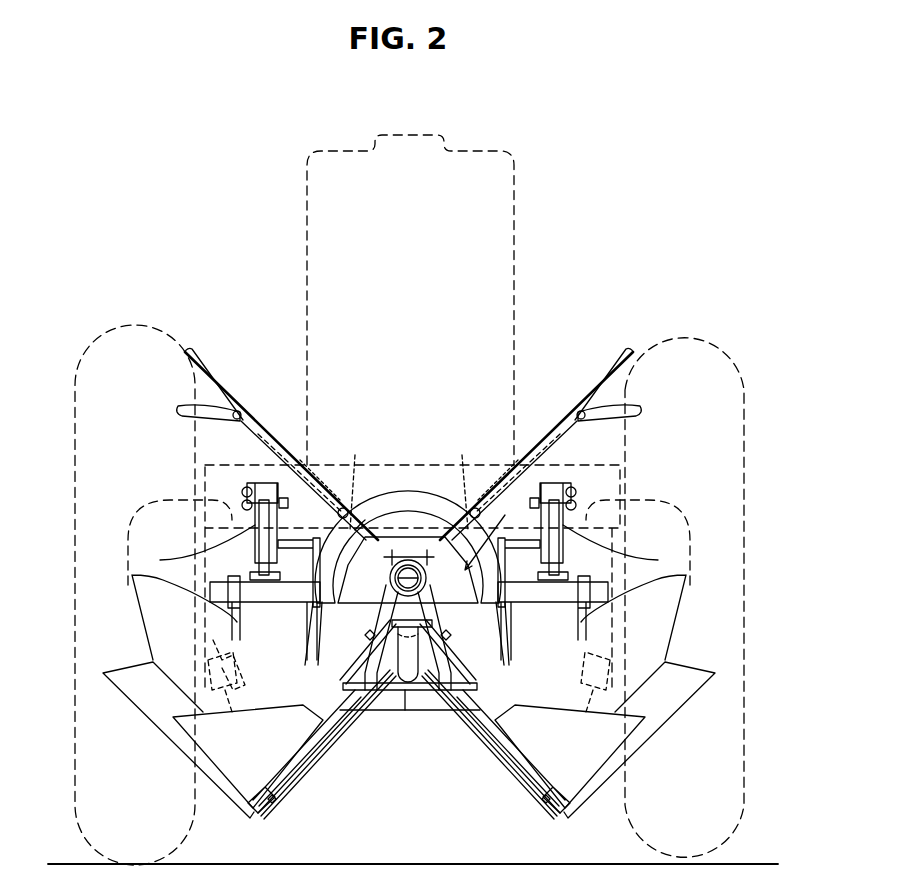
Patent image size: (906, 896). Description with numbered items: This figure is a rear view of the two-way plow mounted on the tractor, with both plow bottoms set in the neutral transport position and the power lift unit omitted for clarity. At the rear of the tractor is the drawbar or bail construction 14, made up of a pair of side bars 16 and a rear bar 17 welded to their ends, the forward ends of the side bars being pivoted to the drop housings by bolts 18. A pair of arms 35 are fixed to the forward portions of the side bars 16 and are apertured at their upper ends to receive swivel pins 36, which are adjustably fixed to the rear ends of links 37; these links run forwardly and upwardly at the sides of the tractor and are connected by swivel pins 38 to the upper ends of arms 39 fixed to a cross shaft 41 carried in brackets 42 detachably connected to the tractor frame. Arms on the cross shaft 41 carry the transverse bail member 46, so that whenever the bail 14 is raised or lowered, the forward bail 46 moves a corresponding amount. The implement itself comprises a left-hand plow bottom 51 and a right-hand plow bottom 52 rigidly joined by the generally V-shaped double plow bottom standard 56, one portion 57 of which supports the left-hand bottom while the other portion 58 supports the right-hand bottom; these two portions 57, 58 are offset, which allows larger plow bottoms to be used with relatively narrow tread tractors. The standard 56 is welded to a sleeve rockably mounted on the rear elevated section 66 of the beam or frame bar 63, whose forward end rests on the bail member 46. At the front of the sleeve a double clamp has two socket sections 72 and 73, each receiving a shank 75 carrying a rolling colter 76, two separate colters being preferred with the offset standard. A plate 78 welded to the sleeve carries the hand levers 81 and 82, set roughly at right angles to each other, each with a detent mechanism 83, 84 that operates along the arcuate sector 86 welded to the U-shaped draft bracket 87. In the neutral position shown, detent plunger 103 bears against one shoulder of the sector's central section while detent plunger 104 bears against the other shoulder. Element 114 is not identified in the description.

The tractor drawbar or bail construction 14 is at (606, 572).
The side bars 16 is at (235, 612).
The rear bar 17 is at (238, 645).
The bolts 18 is at (409, 730).
The arms 35 is at (300, 615).
The swivel pins 36 is at (200, 546).
The links 37 is at (258, 535).
The swivel pins 38 is at (264, 485).
The arms 39 is at (278, 520).
The cross shaft 41 is at (492, 533).
The brackets 42 is at (300, 549).
The transverse bail member 46 is at (305, 650).
The left-hand plow bottom 51 is at (163, 710).
The right-hand plow bottom 52 is at (653, 710).
The double plow bottom standard 56 is at (383, 712).
The portion of the double standard 57 is at (362, 692).
The portion of the double standard 58 is at (465, 712).
The beam or frame bar 63 is at (420, 690).
The rear elevated section 66 is at (408, 560).
The socket section 72 is at (380, 620).
The socket section 73 is at (434, 620).
The shank 75 is at (345, 668).
The rolling colter 76 is at (287, 780).
The plate 78 is at (392, 535).
The hand lever 81 is at (555, 425).
The hand lever 82 is at (270, 430).
The detent mechanism 83 is at (483, 498).
The detent mechanism 84 is at (335, 498).
The arcuate sector 86 is at (425, 498).
The draft bracket 87 is at (445, 515).
The detent plunger 103 is at (455, 483).
The detent plunger 104 is at (357, 480).
The cross bar 114 is at (392, 622).